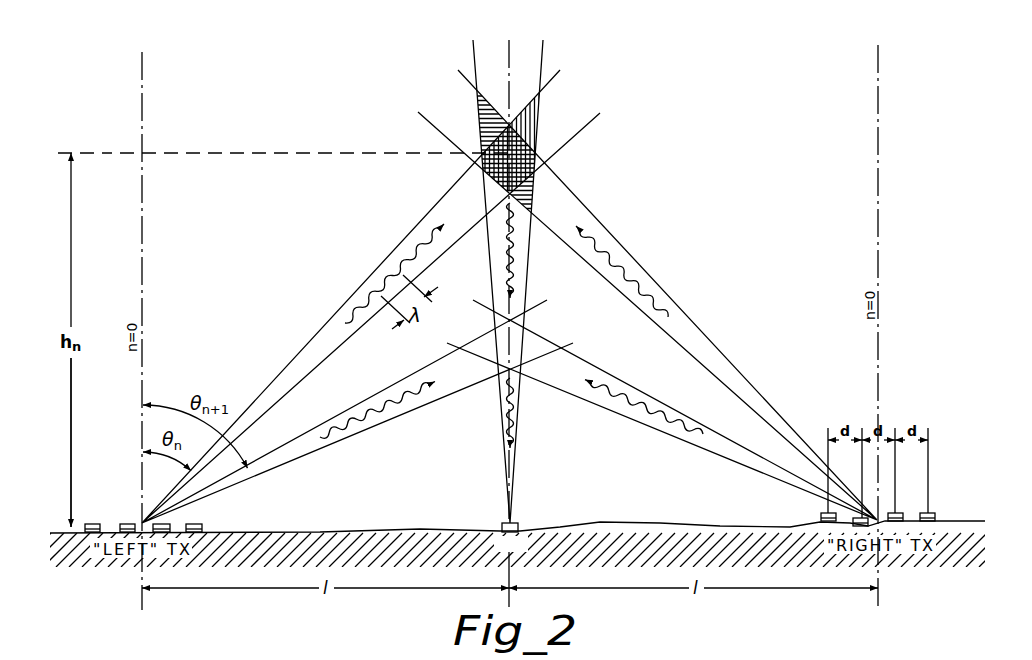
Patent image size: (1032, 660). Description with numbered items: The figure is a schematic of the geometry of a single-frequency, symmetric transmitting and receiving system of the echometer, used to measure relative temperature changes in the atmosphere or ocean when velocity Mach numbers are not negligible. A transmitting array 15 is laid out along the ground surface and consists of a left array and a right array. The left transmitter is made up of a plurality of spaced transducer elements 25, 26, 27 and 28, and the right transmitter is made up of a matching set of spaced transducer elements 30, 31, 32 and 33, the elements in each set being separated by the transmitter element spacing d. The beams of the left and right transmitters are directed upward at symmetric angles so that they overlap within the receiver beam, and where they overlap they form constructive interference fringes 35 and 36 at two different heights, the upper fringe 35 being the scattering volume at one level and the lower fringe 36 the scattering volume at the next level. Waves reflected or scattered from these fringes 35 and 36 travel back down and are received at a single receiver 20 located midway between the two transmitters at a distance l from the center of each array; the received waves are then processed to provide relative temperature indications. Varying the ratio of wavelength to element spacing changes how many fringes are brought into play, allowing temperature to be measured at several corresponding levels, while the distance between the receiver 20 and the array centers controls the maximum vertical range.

The transmitting array 15 is at (124, 563).
The receiver 20 is at (518, 523).
The transducer element 25 is at (94, 522).
The transducer element 26 is at (129, 522).
The transducer element 27 is at (165, 522).
The transducer element 28 is at (203, 522).
The transducer element 30 is at (823, 514).
The transducer element 31 is at (855, 523).
The transducer element 32 is at (896, 512).
The transducer element 33 is at (926, 512).
The constructive interference fringe 35 is at (569, 172).
The constructive interference fringe 36 is at (488, 324).